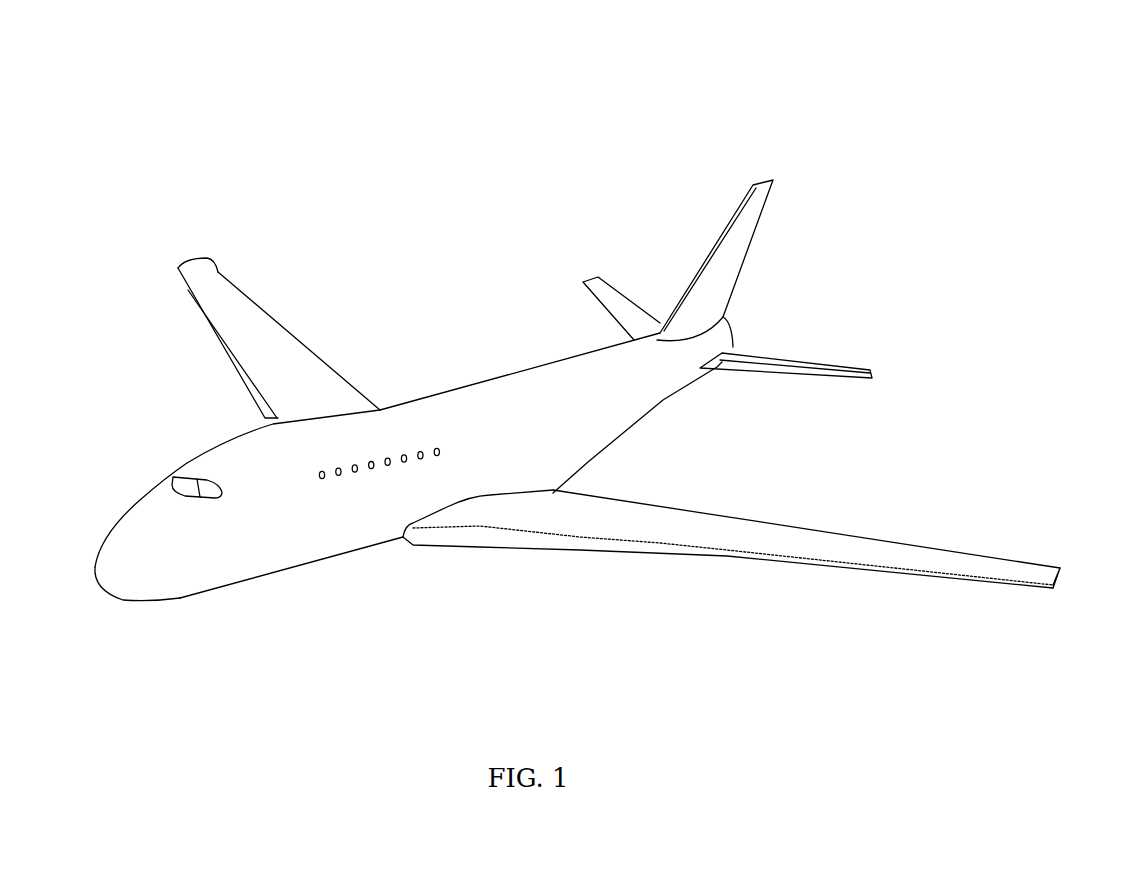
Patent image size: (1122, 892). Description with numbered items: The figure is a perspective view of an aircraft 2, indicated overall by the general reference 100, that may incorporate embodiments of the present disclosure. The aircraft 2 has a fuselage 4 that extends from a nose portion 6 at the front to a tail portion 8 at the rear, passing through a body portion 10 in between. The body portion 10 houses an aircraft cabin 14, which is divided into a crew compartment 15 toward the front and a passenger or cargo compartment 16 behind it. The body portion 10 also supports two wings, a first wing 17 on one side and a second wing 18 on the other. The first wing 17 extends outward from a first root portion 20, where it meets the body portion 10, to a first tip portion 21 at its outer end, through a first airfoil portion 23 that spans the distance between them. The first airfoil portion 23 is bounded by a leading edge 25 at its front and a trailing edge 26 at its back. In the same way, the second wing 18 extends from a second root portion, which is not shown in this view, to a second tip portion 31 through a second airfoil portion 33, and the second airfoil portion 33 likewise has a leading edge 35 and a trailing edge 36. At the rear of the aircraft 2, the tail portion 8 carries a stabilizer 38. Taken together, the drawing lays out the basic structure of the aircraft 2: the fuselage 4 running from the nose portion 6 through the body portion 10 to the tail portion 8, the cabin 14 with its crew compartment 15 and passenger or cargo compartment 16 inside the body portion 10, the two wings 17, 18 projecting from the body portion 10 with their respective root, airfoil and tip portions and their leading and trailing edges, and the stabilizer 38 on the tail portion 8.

The aircraft 100 is at (812, 107).
The aircraft 2 is at (88, 450).
The fuselage 4 is at (228, 582).
The nose portion 6 is at (95, 573).
The tail portion 8 is at (690, 390).
The body portion 10 is at (588, 457).
The aircraft cabin 14 is at (413, 492).
The crew compartment 15 is at (172, 472).
The passenger or cargo compartment 16 is at (443, 415).
The first wing 17 is at (752, 563).
The second wing 18 is at (220, 270).
The first root portion 20 is at (490, 505).
The first tip portion 21 is at (1057, 577).
The first airfoil portion 23 is at (650, 500).
The leading edge 25 is at (582, 540).
The trailing edge 26 is at (772, 520).
The second tip portion 31 is at (190, 263).
The second airfoil portion 33 is at (242, 302).
The leading edge 35 is at (188, 292).
The trailing edge 36 is at (265, 302).
The stabilizer 38 is at (768, 345).